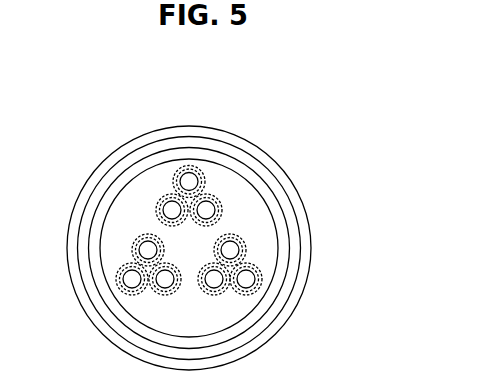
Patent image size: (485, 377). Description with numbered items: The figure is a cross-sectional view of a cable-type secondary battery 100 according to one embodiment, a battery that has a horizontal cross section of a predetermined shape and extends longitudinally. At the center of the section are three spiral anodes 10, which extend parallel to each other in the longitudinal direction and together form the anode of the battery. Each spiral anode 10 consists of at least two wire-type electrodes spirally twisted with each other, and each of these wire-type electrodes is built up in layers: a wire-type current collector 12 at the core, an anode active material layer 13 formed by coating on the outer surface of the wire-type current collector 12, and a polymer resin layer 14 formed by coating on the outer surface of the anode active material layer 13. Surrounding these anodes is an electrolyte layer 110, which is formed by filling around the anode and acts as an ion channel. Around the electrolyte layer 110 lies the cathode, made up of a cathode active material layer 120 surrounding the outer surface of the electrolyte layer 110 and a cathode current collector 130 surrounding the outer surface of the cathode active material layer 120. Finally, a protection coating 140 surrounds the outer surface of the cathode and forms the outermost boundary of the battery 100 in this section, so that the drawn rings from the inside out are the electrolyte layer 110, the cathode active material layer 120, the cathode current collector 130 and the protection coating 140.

The cable 100 is at (275, 113).
The spiral anode 10 is at (167, 187).
The wire-type current collector 12 is at (188, 172).
The anode active material layer 13 is at (193, 169).
The polymer resin layer 14 is at (201, 170).
The electrolyte layer 110 is at (255, 202).
The cathode active material layer 120 is at (277, 207).
The cathode current collector 130 is at (290, 223).
The protection coating 140 is at (308, 232).